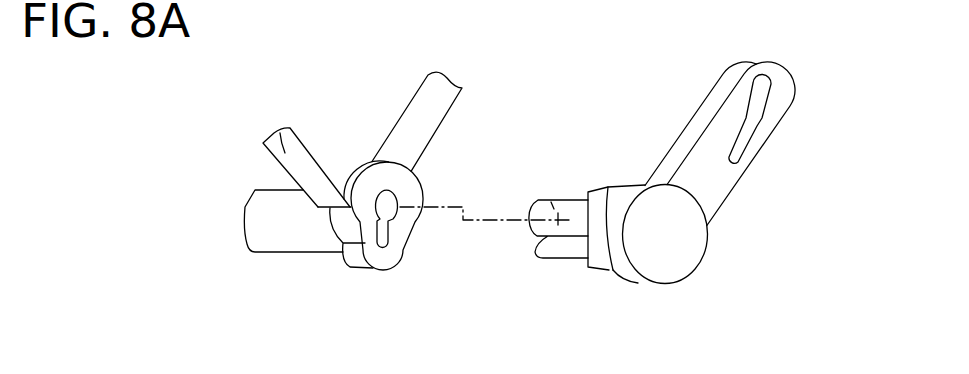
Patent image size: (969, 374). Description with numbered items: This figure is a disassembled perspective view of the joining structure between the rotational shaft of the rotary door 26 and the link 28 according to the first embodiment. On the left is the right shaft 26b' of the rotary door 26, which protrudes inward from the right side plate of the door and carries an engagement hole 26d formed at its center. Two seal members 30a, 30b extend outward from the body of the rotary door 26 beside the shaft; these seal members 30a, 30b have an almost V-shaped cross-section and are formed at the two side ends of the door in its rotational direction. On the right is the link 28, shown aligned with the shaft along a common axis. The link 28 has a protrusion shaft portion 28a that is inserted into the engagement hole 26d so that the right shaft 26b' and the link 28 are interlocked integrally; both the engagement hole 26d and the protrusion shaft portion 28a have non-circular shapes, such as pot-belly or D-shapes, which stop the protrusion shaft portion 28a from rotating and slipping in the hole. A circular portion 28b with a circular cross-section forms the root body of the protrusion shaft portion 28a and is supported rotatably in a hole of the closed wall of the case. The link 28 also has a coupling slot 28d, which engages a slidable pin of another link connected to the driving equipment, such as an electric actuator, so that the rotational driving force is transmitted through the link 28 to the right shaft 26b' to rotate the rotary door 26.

The rotary door 26 is at (351, 138).
The right shaft 26b' is at (293, 261).
The engagement hole 26d is at (402, 200).
The seal member 30a is at (287, 128).
The seal member 30b is at (418, 118).
The link 28 is at (668, 253).
The protrusion shaft portion 28a is at (578, 200).
The circular portion 28b is at (602, 271).
The coupling slot 28d is at (747, 131).